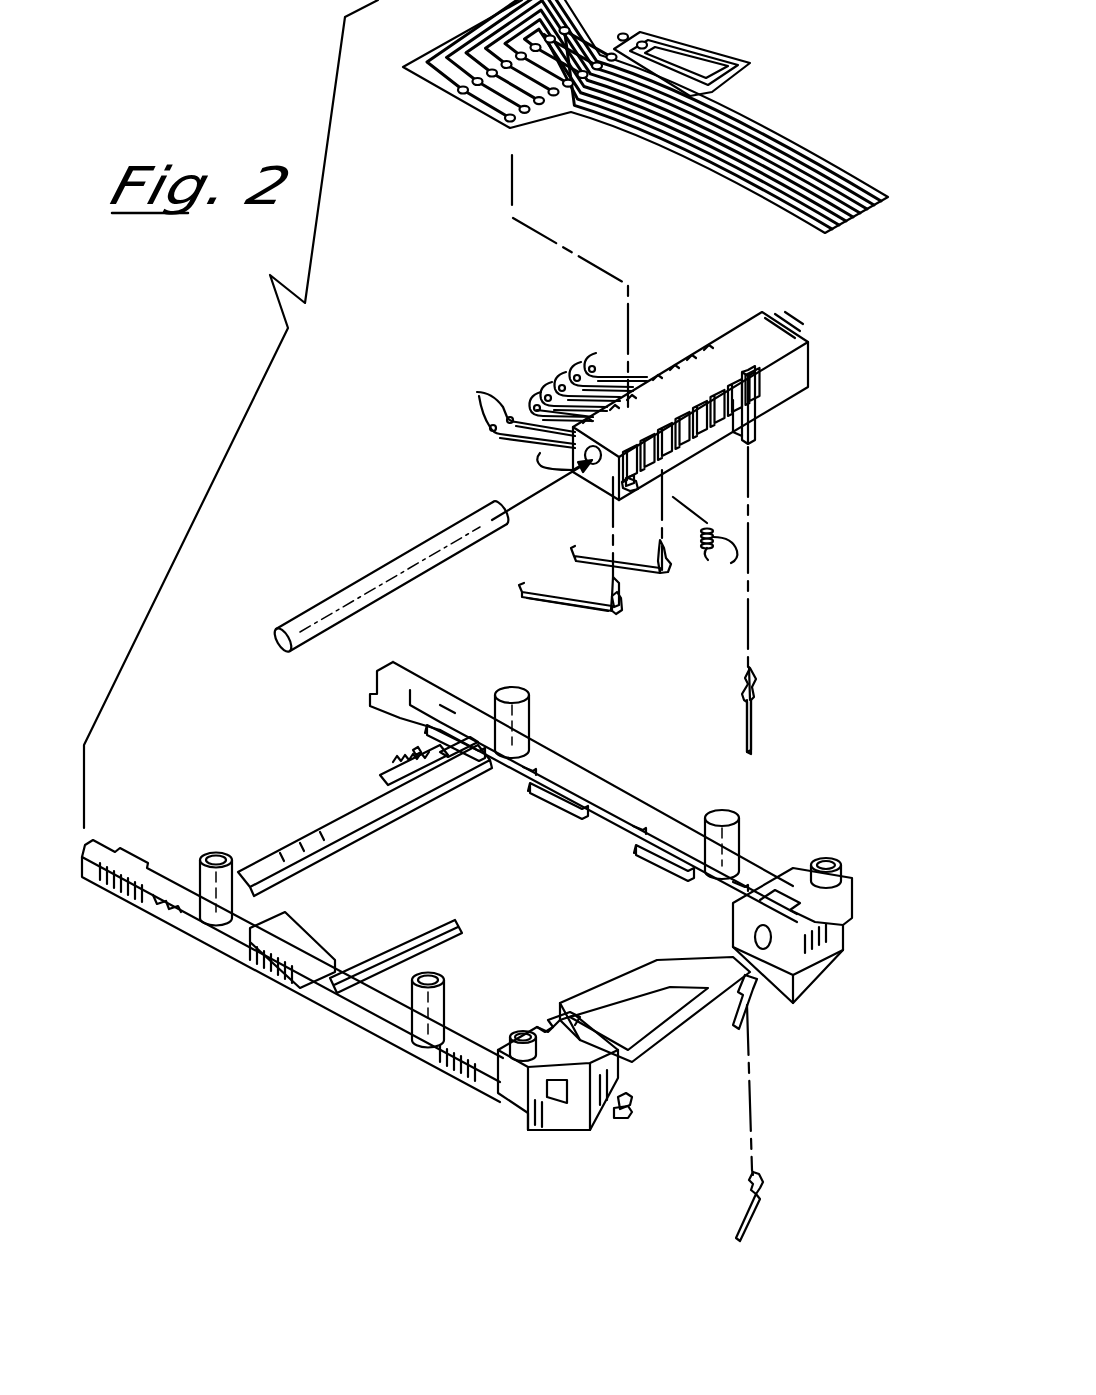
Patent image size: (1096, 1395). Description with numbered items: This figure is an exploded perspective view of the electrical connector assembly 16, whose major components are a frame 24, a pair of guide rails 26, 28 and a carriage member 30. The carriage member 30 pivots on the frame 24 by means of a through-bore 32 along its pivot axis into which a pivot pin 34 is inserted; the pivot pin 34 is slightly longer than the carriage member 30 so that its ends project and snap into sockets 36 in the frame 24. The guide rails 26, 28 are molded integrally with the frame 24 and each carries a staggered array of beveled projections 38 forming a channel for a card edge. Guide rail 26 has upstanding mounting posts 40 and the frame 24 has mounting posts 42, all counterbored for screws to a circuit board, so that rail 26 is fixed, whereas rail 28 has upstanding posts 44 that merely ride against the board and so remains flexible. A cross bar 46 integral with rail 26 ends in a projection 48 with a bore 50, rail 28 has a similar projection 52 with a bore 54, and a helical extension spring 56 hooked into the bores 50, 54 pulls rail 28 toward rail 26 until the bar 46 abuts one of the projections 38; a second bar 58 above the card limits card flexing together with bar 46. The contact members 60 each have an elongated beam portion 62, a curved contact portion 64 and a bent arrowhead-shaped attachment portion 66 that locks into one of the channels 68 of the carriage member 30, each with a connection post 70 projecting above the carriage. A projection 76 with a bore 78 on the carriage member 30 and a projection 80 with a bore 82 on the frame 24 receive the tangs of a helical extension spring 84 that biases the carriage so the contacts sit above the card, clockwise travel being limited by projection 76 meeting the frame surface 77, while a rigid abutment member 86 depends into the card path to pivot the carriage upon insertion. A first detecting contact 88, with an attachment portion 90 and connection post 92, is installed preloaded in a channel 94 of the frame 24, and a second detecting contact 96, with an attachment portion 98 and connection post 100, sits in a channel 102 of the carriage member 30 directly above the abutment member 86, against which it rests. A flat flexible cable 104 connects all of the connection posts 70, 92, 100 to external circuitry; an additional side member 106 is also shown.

The electrical connector assembly 16 is at (353, 1093).
The frame 24 is at (823, 973).
The guide rail 26 is at (217, 953).
The guide rail 28 is at (563, 757).
The carriage member 30 is at (785, 335).
The through-bore 32 is at (598, 464).
The pivot pin 34 is at (328, 600).
The sockets 36 is at (748, 943).
The projections 38 is at (540, 793).
The mounting posts 40 is at (210, 853).
The mounting posts 42 is at (827, 853).
The upstanding posts 44 is at (530, 703).
The cross bar 46 is at (280, 853).
The projection 48 is at (387, 772).
The bore 50 is at (390, 757).
The projection 52 is at (457, 756).
The bore 54 is at (450, 700).
The helical extension spring 56 is at (413, 750).
The bar 58 is at (440, 917).
The contact members 60 is at (592, 367).
The beam portion 62 is at (556, 607).
The contact portion 64 is at (515, 597).
The attachment portion 66 is at (618, 593).
The channels 68 is at (710, 443).
The connection post 70 is at (608, 577).
The projection 76 is at (630, 490).
The surface 77 is at (590, 1127).
The bore 78 is at (633, 470).
The projection 80 is at (627, 1117).
The bore 82 is at (633, 1100).
The helical extension spring 84 is at (714, 547).
The abutment member 86 is at (758, 428).
The first detecting contact 88 is at (747, 1223).
The attachment portion 90 is at (760, 1177).
The connection post 92 is at (753, 1170).
The channel 94 is at (757, 1013).
The second detecting contact 96 is at (747, 725).
The attachment portion 98 is at (760, 684).
The connection post 100 is at (750, 668).
The channel 102 is at (758, 373).
The flat flexible cable 104 is at (757, 118).
The side member 106 is at (687, 1033).